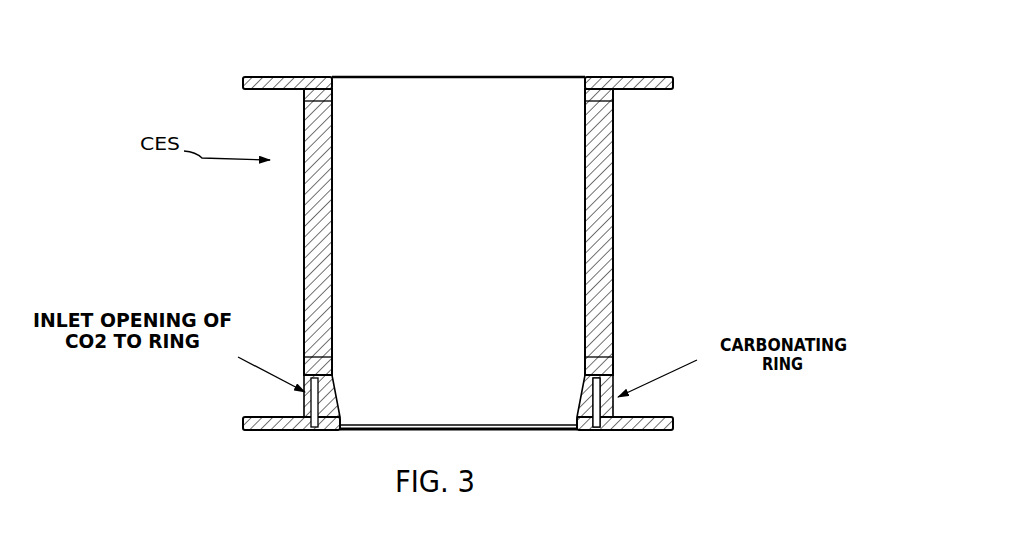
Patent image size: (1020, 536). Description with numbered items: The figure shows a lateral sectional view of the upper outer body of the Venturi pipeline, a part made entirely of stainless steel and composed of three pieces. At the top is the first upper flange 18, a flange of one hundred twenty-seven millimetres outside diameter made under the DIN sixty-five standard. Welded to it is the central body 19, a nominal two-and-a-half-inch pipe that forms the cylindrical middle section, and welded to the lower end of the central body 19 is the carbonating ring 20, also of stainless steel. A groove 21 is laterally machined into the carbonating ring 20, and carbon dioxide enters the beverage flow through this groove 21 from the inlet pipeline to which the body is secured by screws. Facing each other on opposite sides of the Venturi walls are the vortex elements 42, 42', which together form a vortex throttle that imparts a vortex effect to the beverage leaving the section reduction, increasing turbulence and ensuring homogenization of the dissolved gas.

The first upper flange 18 is at (268, 77).
The central body 19 is at (304, 250).
The carbonating ring 20 is at (263, 431).
The groove 21 is at (598, 432).
The vortex element 42 is at (358, 401).
The vortex element 42' is at (549, 401).